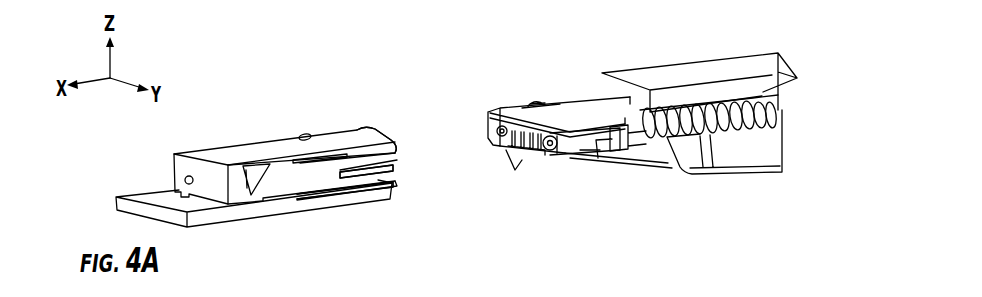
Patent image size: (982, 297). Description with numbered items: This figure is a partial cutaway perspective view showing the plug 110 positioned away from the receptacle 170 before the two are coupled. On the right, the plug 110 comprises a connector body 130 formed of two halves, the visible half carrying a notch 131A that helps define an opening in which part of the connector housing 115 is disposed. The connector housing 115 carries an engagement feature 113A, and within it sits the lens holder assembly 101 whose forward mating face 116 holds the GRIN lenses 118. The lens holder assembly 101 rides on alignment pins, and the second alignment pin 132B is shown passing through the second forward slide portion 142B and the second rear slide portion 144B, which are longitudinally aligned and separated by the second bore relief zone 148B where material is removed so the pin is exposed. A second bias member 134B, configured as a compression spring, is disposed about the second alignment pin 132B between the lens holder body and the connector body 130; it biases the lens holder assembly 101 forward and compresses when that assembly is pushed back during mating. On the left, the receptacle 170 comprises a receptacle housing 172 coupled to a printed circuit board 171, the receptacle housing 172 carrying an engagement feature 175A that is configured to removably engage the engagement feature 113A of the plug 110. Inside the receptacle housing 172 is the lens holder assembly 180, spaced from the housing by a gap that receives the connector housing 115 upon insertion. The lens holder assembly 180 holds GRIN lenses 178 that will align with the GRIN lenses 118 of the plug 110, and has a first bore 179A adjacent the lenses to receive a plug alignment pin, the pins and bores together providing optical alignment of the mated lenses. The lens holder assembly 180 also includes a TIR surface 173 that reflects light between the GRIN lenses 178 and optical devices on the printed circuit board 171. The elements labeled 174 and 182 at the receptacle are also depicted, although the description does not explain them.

The lens holder assembly 101 is at (549, 178).
The plug 110 is at (620, 128).
The engagement feature 113A is at (539, 103).
The connector housing 115 is at (507, 110).
The mating face 116 is at (496, 144).
The GRIN lenses 118 is at (525, 162).
The connector body 130 is at (660, 68).
The notch 131A is at (650, 153).
The second alignment pin 132B is at (724, 128).
The second bias member 134B is at (760, 105).
The second forward slide portion 142B is at (572, 158).
The second rear slide portion 144B is at (628, 141).
The second bore relief zone 148B is at (595, 170).
The receptacle 170 is at (282, 138).
The printed circuit board 171 is at (147, 197).
The receptacle housing 172 is at (221, 152).
The TIR surface 173 is at (250, 170).
The front face 174 is at (326, 178).
The engagement feature 175A is at (306, 133).
The GRIN lenses 178 is at (400, 170).
The first bore 179A is at (184, 178).
The lens holder assembly 180 is at (393, 152).
The spring tab 182 is at (397, 183).